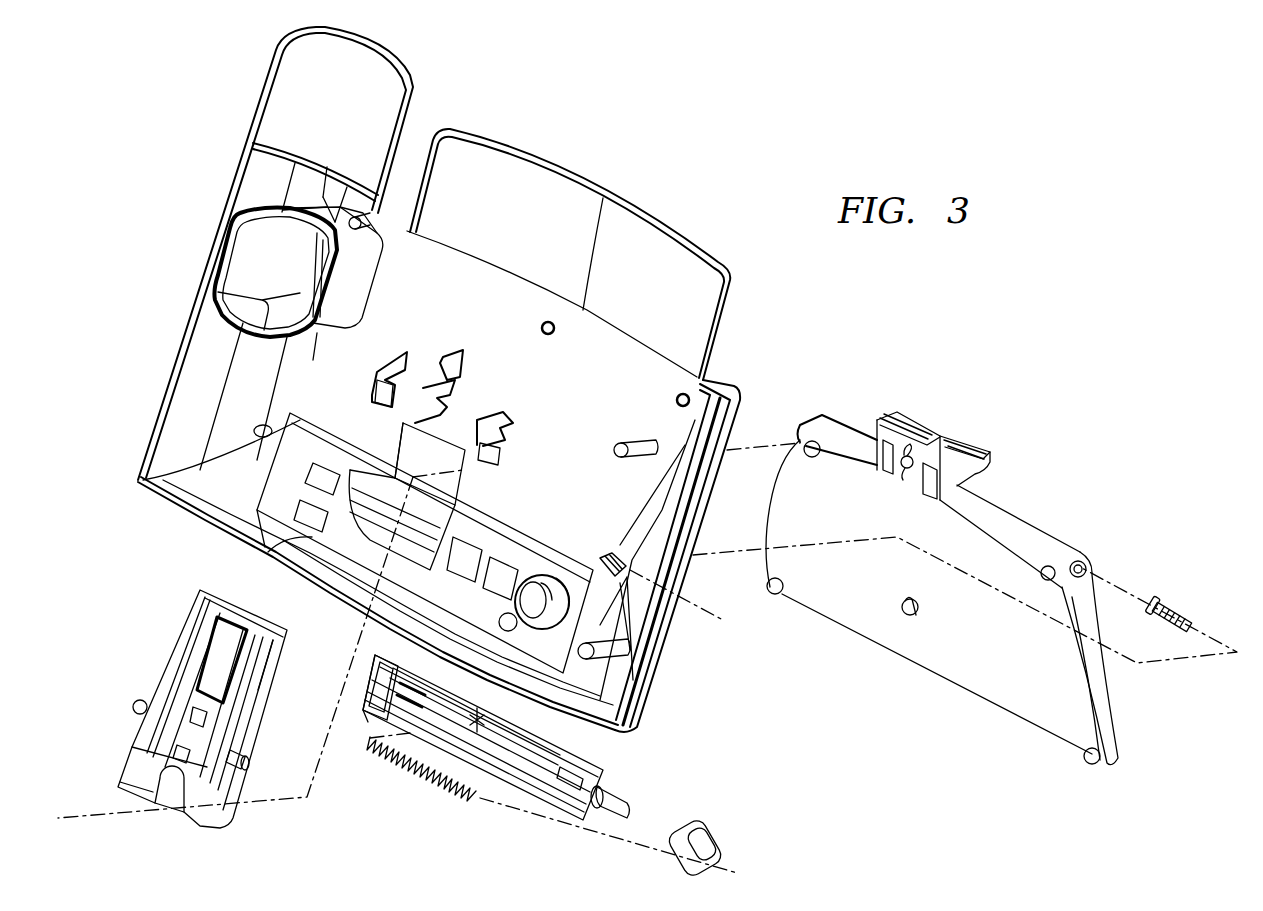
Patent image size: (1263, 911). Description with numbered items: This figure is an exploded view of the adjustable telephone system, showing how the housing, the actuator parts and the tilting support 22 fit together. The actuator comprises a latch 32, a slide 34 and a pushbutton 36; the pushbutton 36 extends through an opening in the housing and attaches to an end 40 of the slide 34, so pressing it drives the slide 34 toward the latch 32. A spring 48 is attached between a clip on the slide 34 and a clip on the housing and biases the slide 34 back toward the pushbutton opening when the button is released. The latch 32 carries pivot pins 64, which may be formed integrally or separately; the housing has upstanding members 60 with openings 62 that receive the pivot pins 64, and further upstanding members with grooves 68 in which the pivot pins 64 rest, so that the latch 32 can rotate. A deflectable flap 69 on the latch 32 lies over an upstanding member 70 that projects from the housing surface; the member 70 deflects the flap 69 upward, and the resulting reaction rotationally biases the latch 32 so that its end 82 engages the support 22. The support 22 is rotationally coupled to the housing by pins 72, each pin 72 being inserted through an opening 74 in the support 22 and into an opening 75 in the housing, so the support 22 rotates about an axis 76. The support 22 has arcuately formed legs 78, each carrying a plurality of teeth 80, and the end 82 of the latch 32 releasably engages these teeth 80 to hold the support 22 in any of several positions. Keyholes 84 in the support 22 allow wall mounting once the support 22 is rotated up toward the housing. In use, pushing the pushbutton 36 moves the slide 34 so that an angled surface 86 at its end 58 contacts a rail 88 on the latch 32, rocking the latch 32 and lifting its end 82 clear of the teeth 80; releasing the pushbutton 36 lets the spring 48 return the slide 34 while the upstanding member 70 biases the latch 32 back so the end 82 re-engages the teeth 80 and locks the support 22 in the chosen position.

The support 22 is at (970, 590).
The latch 32 is at (208, 715).
The slide 34 is at (551, 805).
The pushbutton 36 is at (706, 824).
The end of slide 40 is at (622, 788).
The spring 48 is at (432, 788).
The end of slide 58 is at (366, 724).
The upstanding member 60 is at (395, 356).
The opening 62 is at (375, 403).
The pivot pin 64 is at (135, 703).
The groove 68 is at (458, 397).
The deflectable flap 69 is at (210, 672).
The upstanding member 70 is at (450, 348).
The pin 72 is at (1176, 610).
The opening in support 74 is at (1088, 567).
The opening in housing 75 is at (600, 556).
The axis 76 is at (718, 622).
The arcuately formed leg 78 is at (960, 430).
The teeth 80 is at (904, 405).
The end of latch 82 is at (170, 808).
The keyhole 84 is at (902, 470).
The angled surface 86 is at (393, 662).
The rail 88 is at (278, 657).